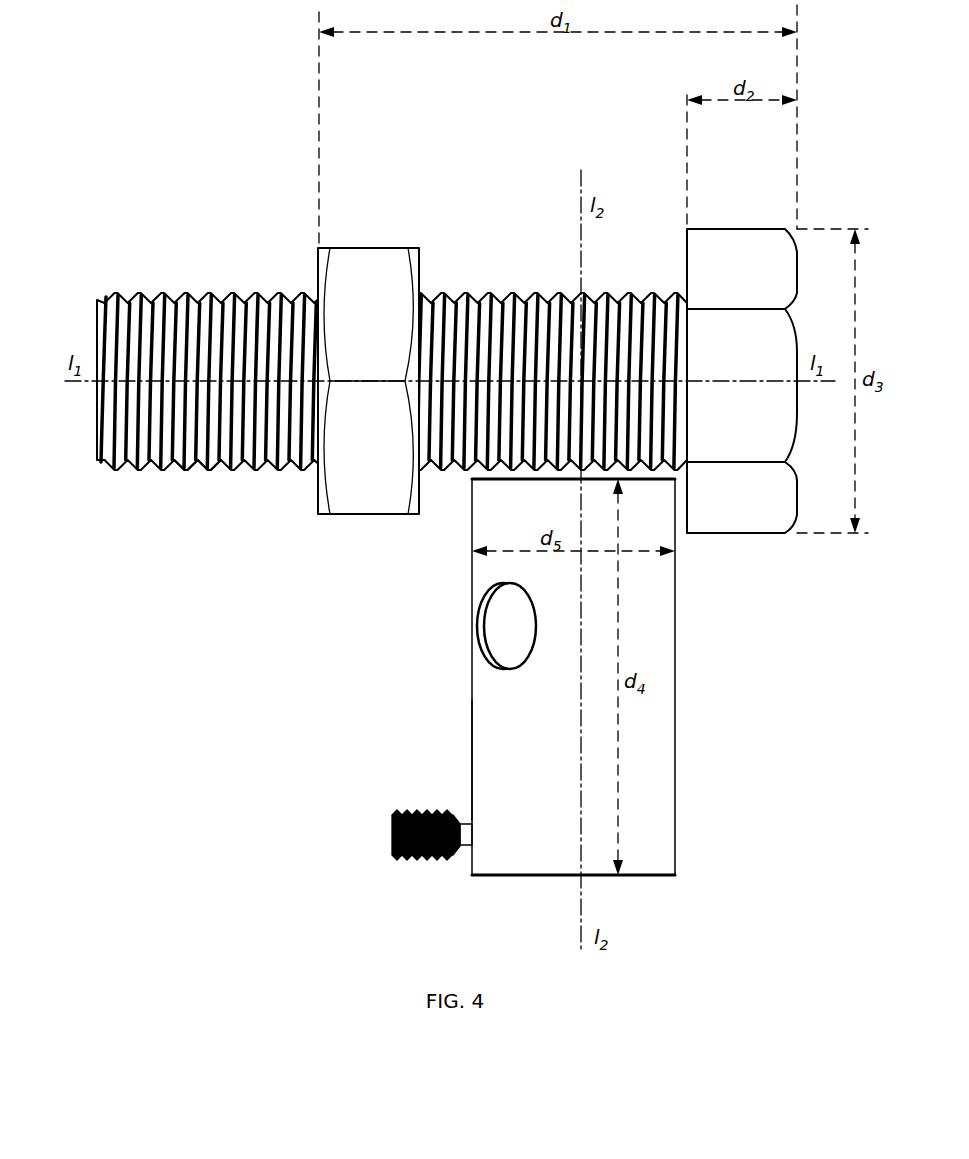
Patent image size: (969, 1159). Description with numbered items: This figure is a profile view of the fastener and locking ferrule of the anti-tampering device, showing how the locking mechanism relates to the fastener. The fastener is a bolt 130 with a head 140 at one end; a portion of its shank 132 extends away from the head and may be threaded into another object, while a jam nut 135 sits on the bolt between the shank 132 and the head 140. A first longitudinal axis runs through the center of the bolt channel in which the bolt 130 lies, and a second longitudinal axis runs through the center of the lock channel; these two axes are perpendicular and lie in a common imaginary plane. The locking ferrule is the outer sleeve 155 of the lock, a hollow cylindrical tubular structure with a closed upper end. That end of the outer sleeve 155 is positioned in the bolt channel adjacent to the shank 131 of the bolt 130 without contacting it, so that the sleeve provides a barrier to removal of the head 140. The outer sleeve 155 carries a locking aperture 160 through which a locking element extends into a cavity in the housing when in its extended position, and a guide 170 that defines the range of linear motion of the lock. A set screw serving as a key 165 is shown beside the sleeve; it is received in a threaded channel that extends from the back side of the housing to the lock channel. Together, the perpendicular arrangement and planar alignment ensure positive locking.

The bolt 130 is at (173, 297).
The shank 131 is at (205, 448).
The shank 132 is at (97, 326).
The jam nut 135 is at (375, 272).
The head 140 is at (748, 252).
The outer sleeve 155 is at (655, 800).
The locking aperture 160 is at (507, 632).
The key 165 is at (392, 832).
The guide 170 is at (473, 755).